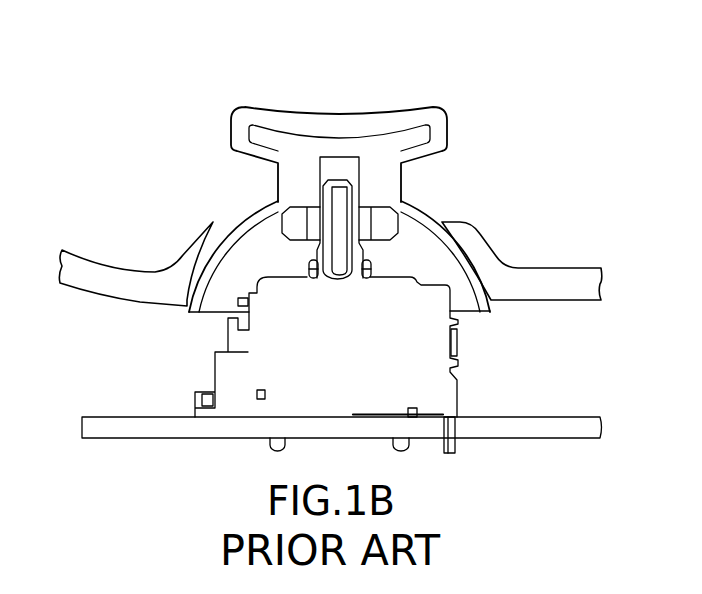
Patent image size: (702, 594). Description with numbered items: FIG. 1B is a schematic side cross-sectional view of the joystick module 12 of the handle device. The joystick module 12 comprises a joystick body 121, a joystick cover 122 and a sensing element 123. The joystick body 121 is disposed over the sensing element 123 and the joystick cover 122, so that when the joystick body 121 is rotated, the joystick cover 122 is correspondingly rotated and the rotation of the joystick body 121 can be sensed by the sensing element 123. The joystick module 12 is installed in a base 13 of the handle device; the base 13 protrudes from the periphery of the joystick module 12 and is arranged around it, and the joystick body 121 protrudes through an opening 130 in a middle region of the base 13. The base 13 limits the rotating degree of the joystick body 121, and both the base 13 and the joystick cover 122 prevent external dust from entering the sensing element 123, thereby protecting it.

The joystick module 12 is at (276, 85).
The joystick body 121 is at (380, 152).
The joystick cover 122 is at (258, 216).
The opening 130 is at (440, 222).
The base 13 is at (157, 283).
The sensing element 123 is at (223, 392).